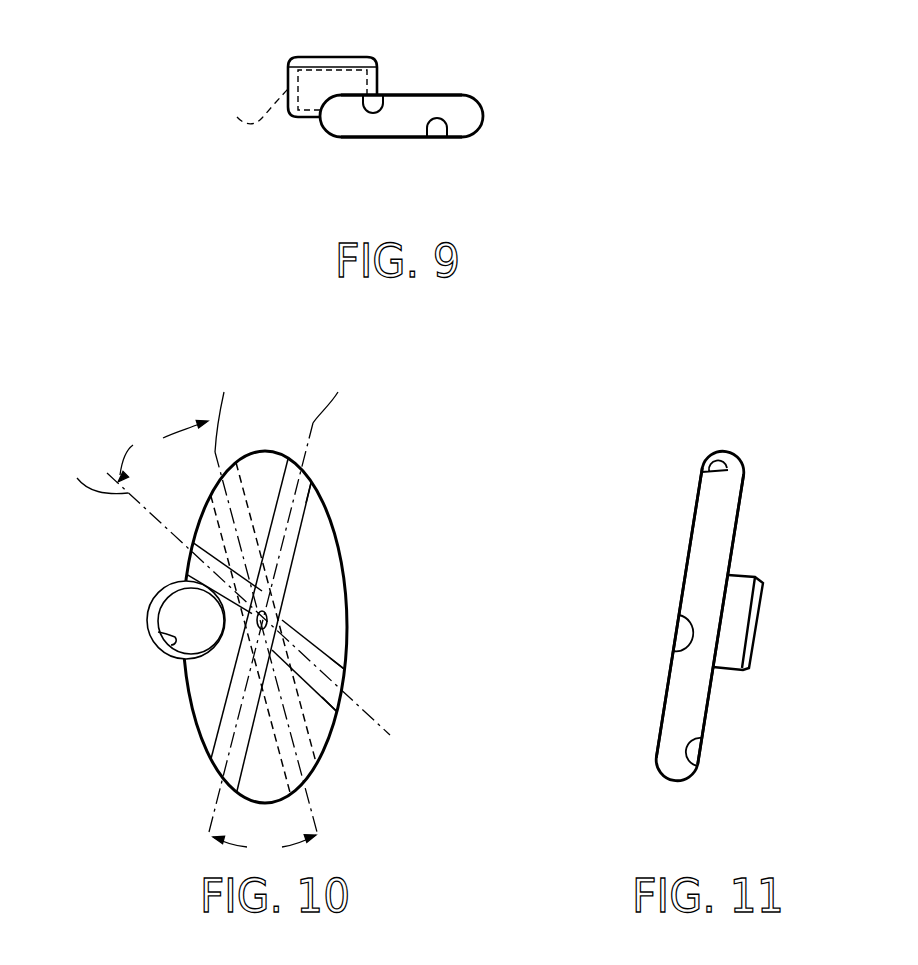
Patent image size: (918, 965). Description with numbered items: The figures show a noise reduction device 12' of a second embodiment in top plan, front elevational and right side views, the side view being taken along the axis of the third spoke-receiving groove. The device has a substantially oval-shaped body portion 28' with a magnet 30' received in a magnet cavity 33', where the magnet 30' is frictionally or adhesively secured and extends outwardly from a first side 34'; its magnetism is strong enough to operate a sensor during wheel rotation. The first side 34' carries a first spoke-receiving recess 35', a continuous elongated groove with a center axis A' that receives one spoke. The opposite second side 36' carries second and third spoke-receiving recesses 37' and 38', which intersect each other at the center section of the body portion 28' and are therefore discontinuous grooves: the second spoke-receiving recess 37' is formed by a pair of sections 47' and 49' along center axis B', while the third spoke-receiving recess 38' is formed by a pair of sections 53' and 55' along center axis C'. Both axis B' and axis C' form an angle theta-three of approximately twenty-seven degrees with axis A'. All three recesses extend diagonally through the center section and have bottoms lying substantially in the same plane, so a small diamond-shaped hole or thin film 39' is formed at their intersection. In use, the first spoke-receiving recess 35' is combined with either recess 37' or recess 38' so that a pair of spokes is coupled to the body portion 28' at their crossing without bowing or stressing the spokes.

In FIG. 9, the noise reduction device 12' is at (408, 103).
In FIG. 10, the noise reduction device 12' is at (272, 611).
In FIG. 9, the body portion 28' is at (460, 103).
In FIG. 10, the body portion 28' is at (265, 627).
In FIG. 11, the body portion 28' is at (681, 597).
In FIG. 9, the magnet 30' is at (291, 94).
In FIG. 10, the magnet 30' is at (152, 596).
In FIG. 10, the magnet cavity 33' is at (125, 655).
In FIG. 9, the first side 34' is at (429, 62).
In FIG. 11, the first side 34' is at (750, 619).
In FIG. 9, the first spoke-receiving recess 35' is at (403, 56).
In FIG. 10, the first spoke-receiving recess 35' is at (264, 594).
In FIG. 11, the first spoke-receiving recess 35' is at (740, 757).
In FIG. 9, the second side 36' is at (401, 171).
In FIG. 11, the second side 36' is at (660, 613).
In FIG. 9, the second spoke-receiving recess 37' is at (467, 152).
In FIG. 10, the second spoke-receiving recess 37' is at (360, 465).
In FIG. 11, the second spoke-receiving recess 37' is at (660, 450).
In FIG. 10, the third spoke-receiving recess 38' is at (400, 685).
In FIG. 11, the third spoke-receiving recess 38' is at (626, 639).
In FIG. 10, the diamond-shaped hole or thin film 39' is at (350, 634).
In FIG. 10, the section of second spoke-receiving recess 47' is at (280, 513).
In FIG. 10, the section of second spoke-receiving recess 49' is at (198, 702).
In FIG. 10, the section of third spoke-receiving recess 53' is at (211, 547).
In FIG. 10, the section of third spoke-receiving recess 55' is at (334, 654).